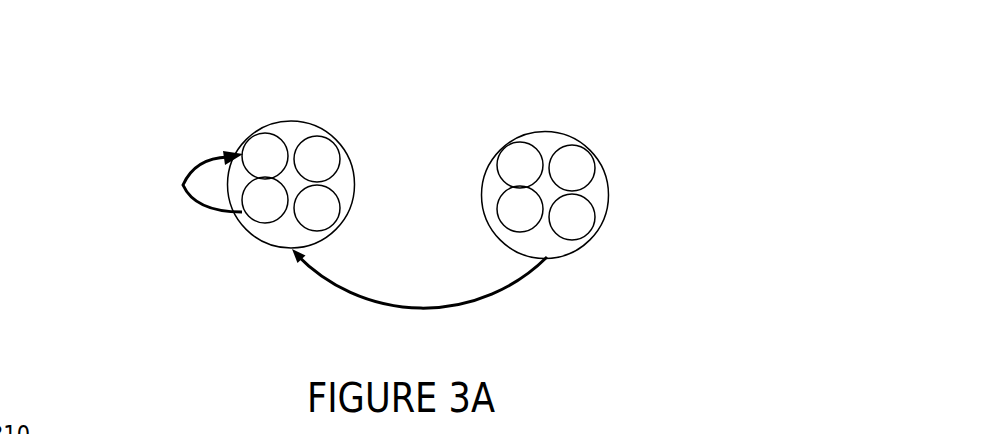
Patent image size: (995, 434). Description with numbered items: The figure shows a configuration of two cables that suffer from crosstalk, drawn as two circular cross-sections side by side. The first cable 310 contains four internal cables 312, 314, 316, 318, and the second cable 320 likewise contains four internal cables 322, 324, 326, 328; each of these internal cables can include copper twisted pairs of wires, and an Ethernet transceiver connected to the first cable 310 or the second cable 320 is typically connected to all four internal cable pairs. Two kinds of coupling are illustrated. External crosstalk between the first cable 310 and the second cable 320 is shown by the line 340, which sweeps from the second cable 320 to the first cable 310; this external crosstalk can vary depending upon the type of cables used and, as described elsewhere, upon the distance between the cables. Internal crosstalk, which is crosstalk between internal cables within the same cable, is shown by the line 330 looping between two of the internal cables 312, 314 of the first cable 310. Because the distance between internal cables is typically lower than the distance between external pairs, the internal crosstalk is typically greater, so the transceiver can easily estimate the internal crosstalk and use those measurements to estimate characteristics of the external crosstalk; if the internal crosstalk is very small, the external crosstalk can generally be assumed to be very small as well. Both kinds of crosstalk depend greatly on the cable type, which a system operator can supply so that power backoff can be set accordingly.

The first cable 310 is at (291, 122).
The internal cable 312 is at (265, 201).
The internal cable 314 is at (265, 155).
The internal cable 316 is at (317, 158).
The internal cable 318 is at (317, 209).
The second cable 320 is at (544, 132).
The internal cable 322 is at (520, 208).
The internal cable 324 is at (520, 163).
The internal cable 326 is at (572, 167).
The internal cable 328 is at (572, 217).
The line indicating internal crosstalk 330 is at (183, 184).
The line indicating external crosstalk 340 is at (442, 312).